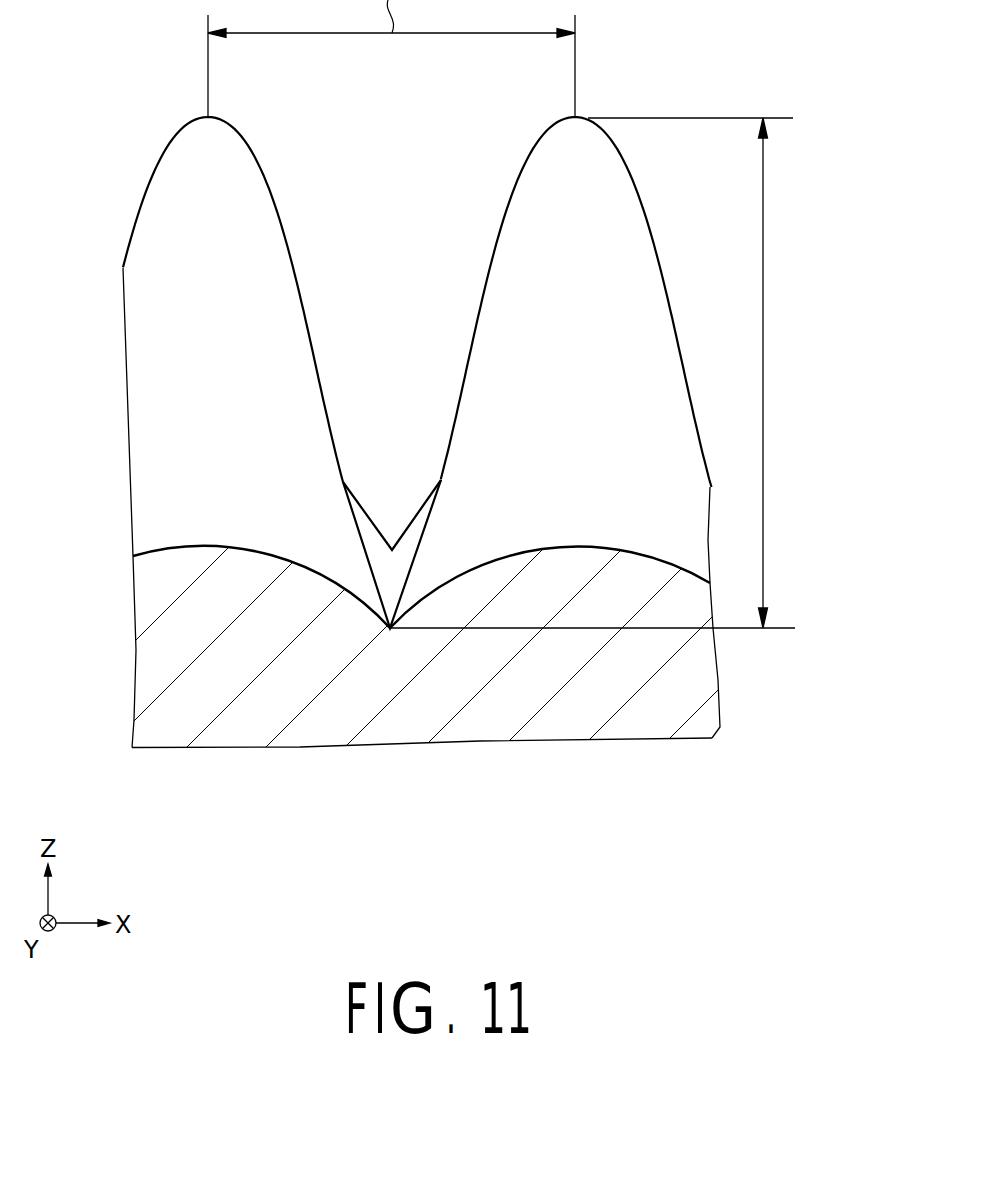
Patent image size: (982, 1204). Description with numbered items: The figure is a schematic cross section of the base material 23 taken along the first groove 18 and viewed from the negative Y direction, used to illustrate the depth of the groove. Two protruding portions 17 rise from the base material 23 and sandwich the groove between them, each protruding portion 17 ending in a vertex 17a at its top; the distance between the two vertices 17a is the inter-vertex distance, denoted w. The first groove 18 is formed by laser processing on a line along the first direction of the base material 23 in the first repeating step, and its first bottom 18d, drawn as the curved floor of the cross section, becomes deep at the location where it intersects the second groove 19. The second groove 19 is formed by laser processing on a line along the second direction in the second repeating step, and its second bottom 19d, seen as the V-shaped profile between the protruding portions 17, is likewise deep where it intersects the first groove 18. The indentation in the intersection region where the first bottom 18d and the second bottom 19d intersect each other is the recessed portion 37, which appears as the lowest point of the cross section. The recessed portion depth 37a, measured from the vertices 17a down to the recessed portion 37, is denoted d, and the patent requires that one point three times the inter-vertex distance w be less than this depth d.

The protruding portion 17 is at (158, 186).
The vertex 17a is at (207, 112).
The first groove 18 is at (421, 533).
The first bottom 18d is at (604, 538).
The second groove 19 is at (394, 477).
The second bottom 19d is at (392, 528).
The base material 23 is at (708, 678).
The recessed portion 37 is at (392, 626).
The recessed portion depth 37a is at (764, 370).